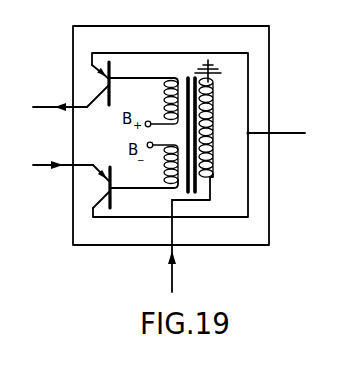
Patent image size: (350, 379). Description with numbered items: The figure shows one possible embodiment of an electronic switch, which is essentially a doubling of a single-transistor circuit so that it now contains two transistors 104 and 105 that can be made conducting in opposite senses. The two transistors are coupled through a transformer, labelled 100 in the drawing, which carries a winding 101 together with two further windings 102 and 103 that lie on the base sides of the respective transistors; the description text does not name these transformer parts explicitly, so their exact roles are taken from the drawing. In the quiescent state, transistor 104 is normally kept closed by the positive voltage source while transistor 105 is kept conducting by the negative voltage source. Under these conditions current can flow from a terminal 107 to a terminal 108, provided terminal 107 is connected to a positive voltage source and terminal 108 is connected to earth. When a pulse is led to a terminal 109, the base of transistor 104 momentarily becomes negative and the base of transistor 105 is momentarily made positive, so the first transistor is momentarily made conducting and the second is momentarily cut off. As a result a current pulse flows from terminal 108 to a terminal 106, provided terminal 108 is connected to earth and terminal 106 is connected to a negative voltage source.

The transformer core 100 is at (179, 125).
The secondary winding 101 is at (214, 128).
The primary winding 102 is at (172, 116).
The primary winding 103 is at (173, 165).
The transistor 104 is at (114, 82).
The transistor 105 is at (113, 190).
The terminal 106 is at (42, 107).
The terminal 107 is at (42, 165).
The terminal 108 is at (310, 131).
The terminal 109 is at (171, 284).